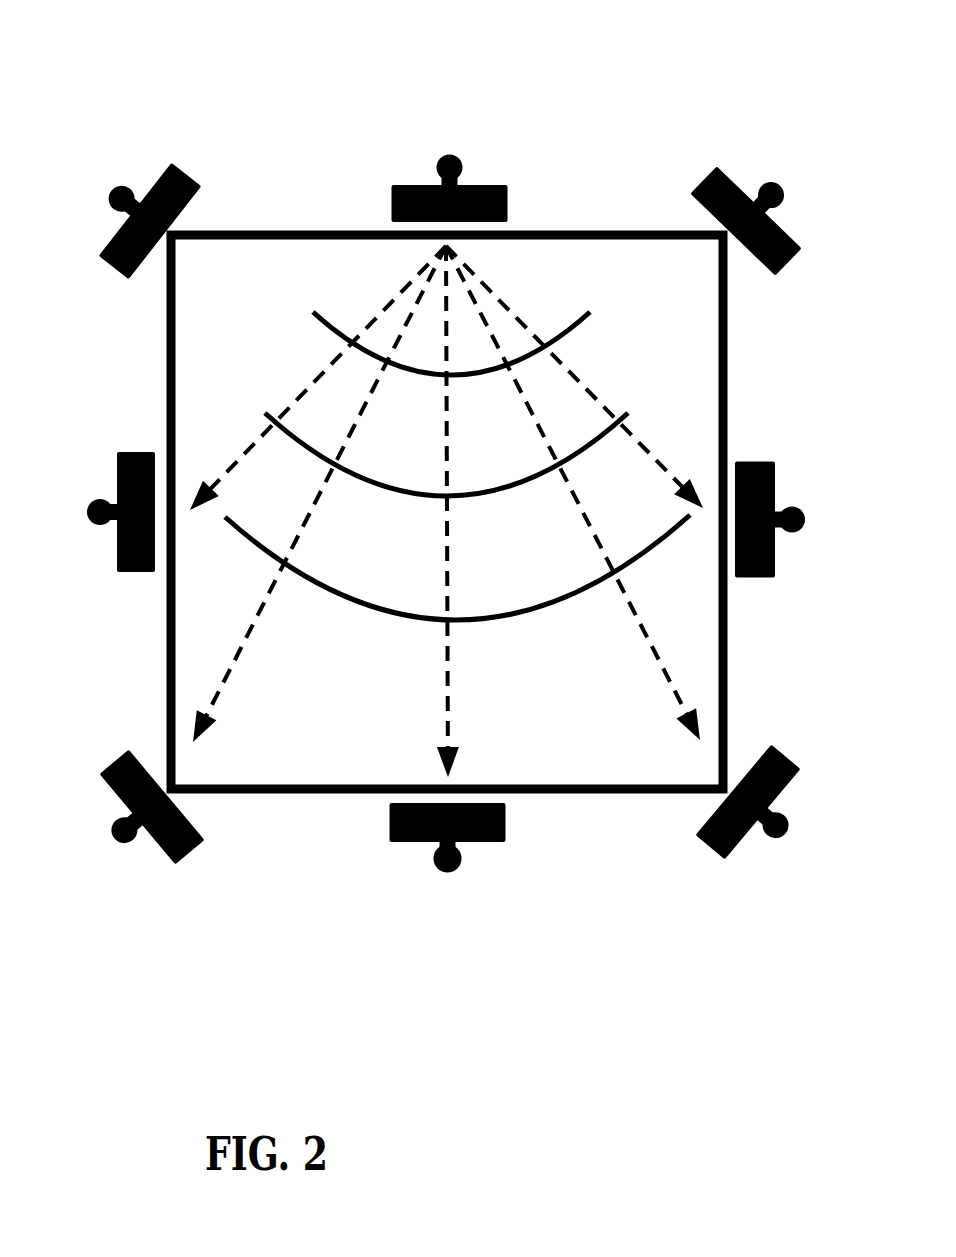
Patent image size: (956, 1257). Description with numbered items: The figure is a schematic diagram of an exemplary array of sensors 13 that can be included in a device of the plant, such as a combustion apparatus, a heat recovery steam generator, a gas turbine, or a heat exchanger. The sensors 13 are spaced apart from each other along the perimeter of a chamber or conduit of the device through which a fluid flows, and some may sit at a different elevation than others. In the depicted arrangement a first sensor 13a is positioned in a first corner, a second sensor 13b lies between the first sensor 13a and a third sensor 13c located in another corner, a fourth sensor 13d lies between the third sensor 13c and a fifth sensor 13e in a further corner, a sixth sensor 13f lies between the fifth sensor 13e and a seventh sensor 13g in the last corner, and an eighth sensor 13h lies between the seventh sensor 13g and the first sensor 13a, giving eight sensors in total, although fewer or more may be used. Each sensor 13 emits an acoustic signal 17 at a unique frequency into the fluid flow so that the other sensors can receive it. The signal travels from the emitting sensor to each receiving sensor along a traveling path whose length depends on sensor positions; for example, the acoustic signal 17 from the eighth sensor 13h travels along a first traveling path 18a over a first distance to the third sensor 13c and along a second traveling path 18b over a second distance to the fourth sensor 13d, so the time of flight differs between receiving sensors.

The sensors 13 is at (720, 172).
The first sensor 13a is at (135, 257).
The second sensor 13b is at (145, 469).
The third sensor 13c is at (190, 845).
The fourth sensor 13d is at (487, 825).
The fifth sensor 13e is at (768, 835).
The sixth sensor 13f is at (808, 530).
The seventh sensor 13g is at (795, 258).
The eighth sensor 13h is at (512, 198).
The acoustic signal 17 is at (290, 362).
The first traveling path 18a is at (248, 668).
The second traveling path 18b is at (468, 688).